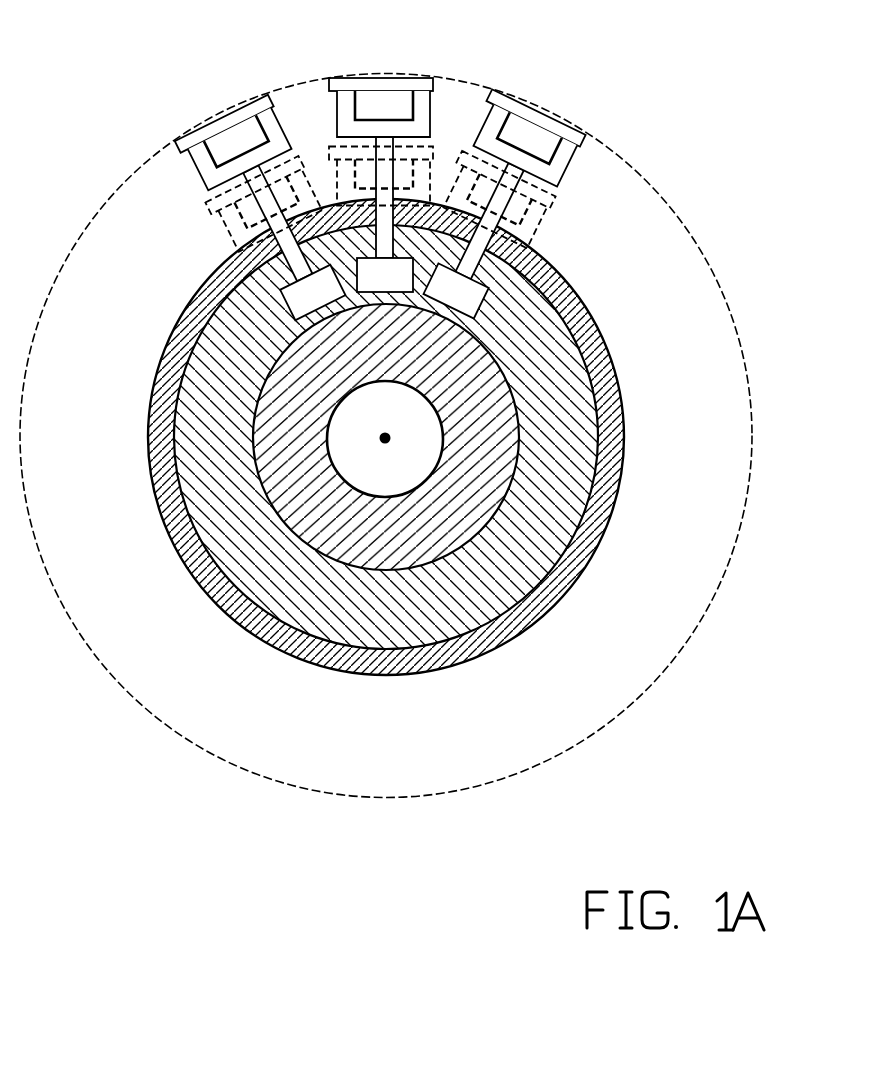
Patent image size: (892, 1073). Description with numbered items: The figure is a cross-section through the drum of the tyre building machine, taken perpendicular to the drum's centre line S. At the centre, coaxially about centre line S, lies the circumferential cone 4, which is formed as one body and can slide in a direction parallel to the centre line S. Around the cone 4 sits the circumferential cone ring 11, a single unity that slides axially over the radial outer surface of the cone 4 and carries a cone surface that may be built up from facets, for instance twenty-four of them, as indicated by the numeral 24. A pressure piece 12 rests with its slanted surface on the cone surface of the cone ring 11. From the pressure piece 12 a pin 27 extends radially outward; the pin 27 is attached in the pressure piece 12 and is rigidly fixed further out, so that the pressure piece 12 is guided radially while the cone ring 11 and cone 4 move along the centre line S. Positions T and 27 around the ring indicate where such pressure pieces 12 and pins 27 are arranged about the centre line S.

The magnetic sensor T is at (222, 115).
The facets 24 is at (388, 90).
The pin 27 is at (422, 148).
The pressure piece 12 is at (390, 265).
The cone ring 11 is at (567, 403).
The cone 4 is at (477, 473).
The centre line S is at (400, 451).